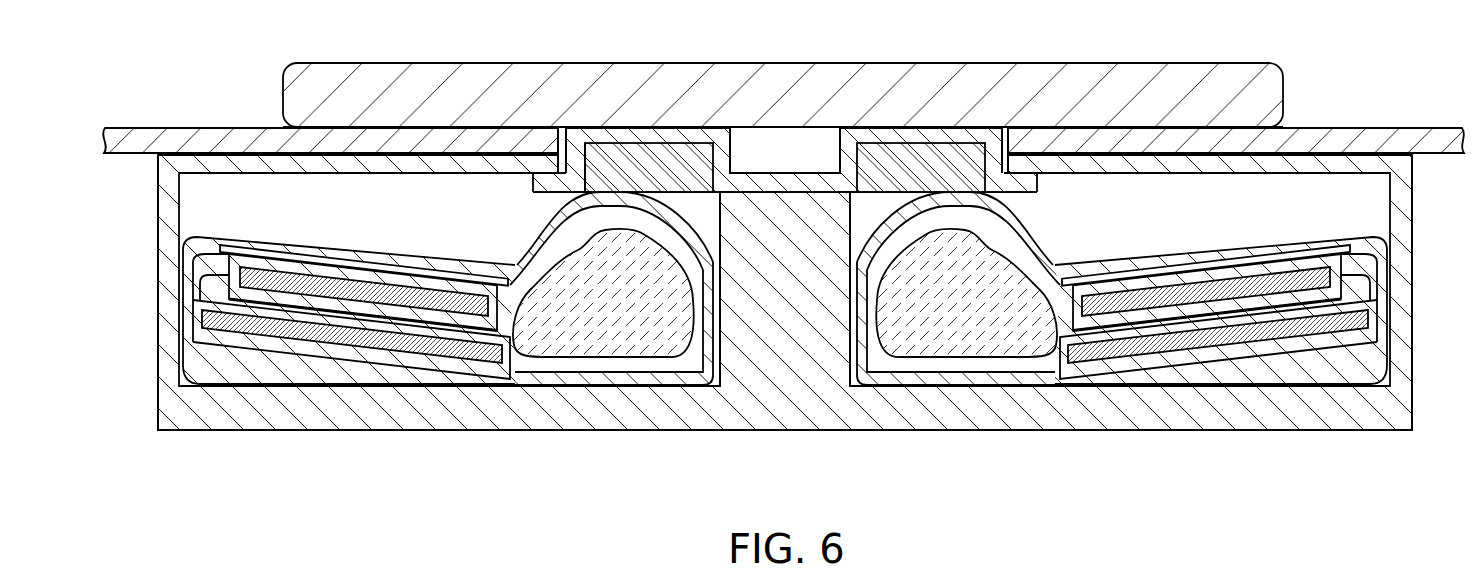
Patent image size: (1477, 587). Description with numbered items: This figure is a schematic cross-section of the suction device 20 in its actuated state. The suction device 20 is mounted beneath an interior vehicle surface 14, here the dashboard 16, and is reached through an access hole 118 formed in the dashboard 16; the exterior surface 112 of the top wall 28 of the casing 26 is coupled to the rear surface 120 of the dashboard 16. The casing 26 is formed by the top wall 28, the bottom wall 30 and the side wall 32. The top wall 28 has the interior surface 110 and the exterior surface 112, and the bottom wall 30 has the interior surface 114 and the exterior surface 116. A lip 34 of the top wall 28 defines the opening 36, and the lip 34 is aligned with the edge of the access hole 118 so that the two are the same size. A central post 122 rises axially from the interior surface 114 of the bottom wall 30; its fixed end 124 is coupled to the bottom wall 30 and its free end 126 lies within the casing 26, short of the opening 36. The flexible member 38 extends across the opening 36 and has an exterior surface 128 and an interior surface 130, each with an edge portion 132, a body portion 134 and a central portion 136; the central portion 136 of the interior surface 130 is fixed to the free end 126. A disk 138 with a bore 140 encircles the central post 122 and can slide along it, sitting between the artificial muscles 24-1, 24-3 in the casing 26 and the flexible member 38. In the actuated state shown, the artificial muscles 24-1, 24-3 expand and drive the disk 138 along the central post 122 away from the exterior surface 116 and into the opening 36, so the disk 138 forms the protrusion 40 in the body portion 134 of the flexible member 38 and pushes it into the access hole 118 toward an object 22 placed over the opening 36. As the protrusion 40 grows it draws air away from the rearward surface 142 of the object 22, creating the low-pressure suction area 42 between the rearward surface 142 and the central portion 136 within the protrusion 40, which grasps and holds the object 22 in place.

The interior vehicle surface 14 is at (1375, 136).
The dashboard 16 is at (1428, 136).
The suction device 20 is at (472, 480).
The object 22 is at (862, 72).
The artificial muscle 24-1 is at (410, 222).
The artificial muscle 24-3 is at (1159, 220).
The casing 26 is at (912, 480).
The top wall 28 is at (208, 158).
The bottom wall 30 is at (668, 432).
The side wall 32 is at (163, 306).
The lip 34 is at (585, 163).
The opening 36 is at (1001, 136).
The flexible member 38 is at (735, 147).
The protrusion 40 is at (645, 135).
The suction area 42 is at (808, 150).
The interior surface 110 is at (300, 180).
The exterior surface 112 is at (175, 153).
The interior surface 114 is at (592, 382).
The exterior surface 116 is at (415, 432).
The access hole 118 is at (569, 136).
The rear surface 120 is at (1300, 158).
The central post 122 is at (857, 302).
The fixed end 124 is at (856, 366).
The free end 126 is at (780, 195).
The exterior surface 128 is at (815, 168).
The interior surface 130 is at (545, 200).
The edge portion 132 is at (522, 185).
The body portion 134 is at (698, 140).
The central portion 136 is at (780, 170).
The disk 138 is at (975, 182).
The bore 140 is at (860, 172).
The rearward surface 142 is at (1140, 128).